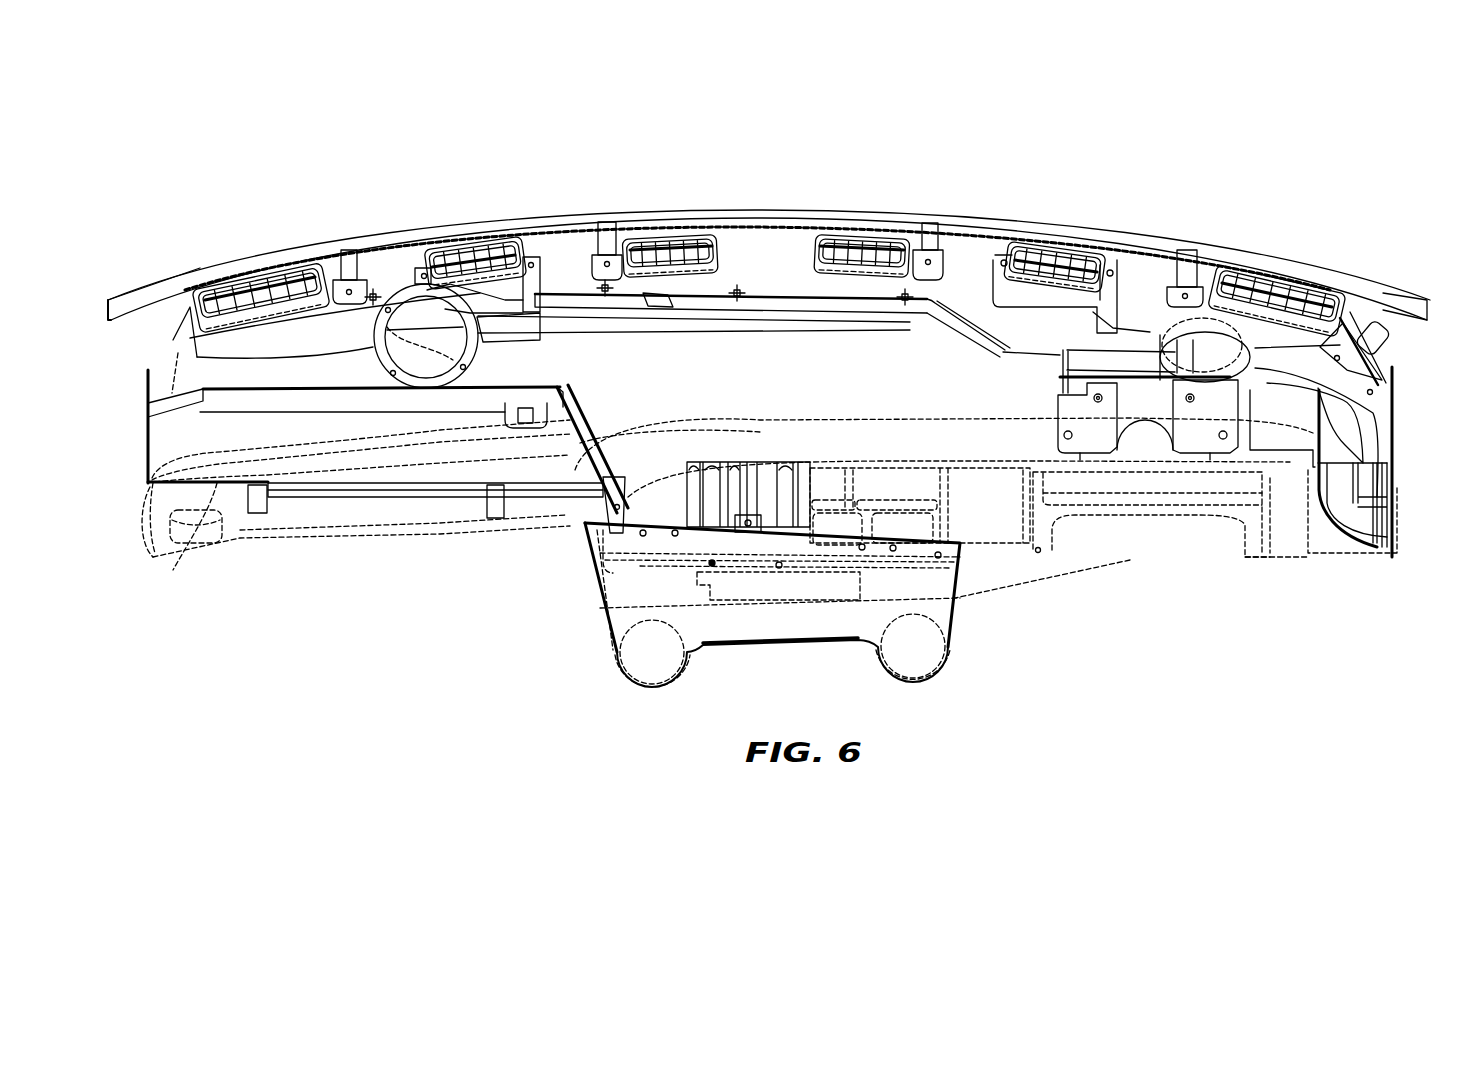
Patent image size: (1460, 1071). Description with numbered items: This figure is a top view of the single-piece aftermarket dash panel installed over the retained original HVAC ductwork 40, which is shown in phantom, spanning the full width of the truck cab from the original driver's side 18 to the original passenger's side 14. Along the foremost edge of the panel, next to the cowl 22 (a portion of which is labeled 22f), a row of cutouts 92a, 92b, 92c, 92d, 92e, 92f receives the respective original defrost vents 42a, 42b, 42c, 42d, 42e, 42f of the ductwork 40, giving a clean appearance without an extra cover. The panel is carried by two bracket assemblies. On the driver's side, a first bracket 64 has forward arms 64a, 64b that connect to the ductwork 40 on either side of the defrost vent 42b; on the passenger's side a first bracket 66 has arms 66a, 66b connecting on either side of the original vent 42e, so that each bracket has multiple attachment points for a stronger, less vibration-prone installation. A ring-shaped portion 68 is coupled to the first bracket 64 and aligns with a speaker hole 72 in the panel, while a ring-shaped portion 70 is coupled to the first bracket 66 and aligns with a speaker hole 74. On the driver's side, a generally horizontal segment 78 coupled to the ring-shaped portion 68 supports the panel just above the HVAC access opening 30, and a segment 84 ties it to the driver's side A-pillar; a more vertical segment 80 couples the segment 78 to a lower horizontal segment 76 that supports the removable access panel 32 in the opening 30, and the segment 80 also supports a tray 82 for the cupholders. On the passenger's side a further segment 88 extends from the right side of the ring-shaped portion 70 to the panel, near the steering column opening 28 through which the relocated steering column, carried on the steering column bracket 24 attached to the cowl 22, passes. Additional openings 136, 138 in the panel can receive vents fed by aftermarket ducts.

The original passenger's side 14 is at (1383, 257).
The original driver's side 18 is at (188, 254).
The cowl 22 is at (1063, 237).
The duct end portion 22f is at (136, 294).
The steering column bracket 24 is at (1195, 445).
The steering column opening 28 is at (1052, 550).
The HVAC access opening 30 is at (270, 447).
The access panel 32 is at (385, 537).
The original HVAC ductwork 40 is at (793, 285).
The original defrost vent 42a is at (265, 277).
The original defrost vent 42b is at (462, 248).
The original defrost vent 42c is at (673, 240).
The original defrost vent 42d is at (875, 242).
The original vent 42e is at (1058, 255).
The original defrost vent 42f is at (1270, 285).
The first bracket 64 is at (565, 262).
The arm 64a is at (423, 270).
The arm 64b is at (527, 255).
The first bracket 66 is at (1018, 298).
The arm 66a is at (1003, 258).
The arm 66b is at (1112, 268).
The ring-shaped portion 68 is at (373, 345).
The ring-shaped portion 70 is at (1367, 425).
The hole 72 is at (480, 360).
The hole 74 is at (1250, 330).
The segment 76 is at (443, 487).
The segment 78 is at (320, 398).
The segment 80 is at (575, 423).
The tray 82 is at (643, 650).
The segment 84 is at (148, 380).
The further segment 88 is at (1390, 370).
The cutout 92a is at (298, 270).
The cutout 92b is at (500, 250).
The cutout 92c is at (728, 245).
The cutout 92d is at (808, 242).
The cutout 92e is at (1030, 250).
The cutout 92f is at (1233, 280).
The opening 136 is at (180, 550).
The opening 138 is at (1328, 550).